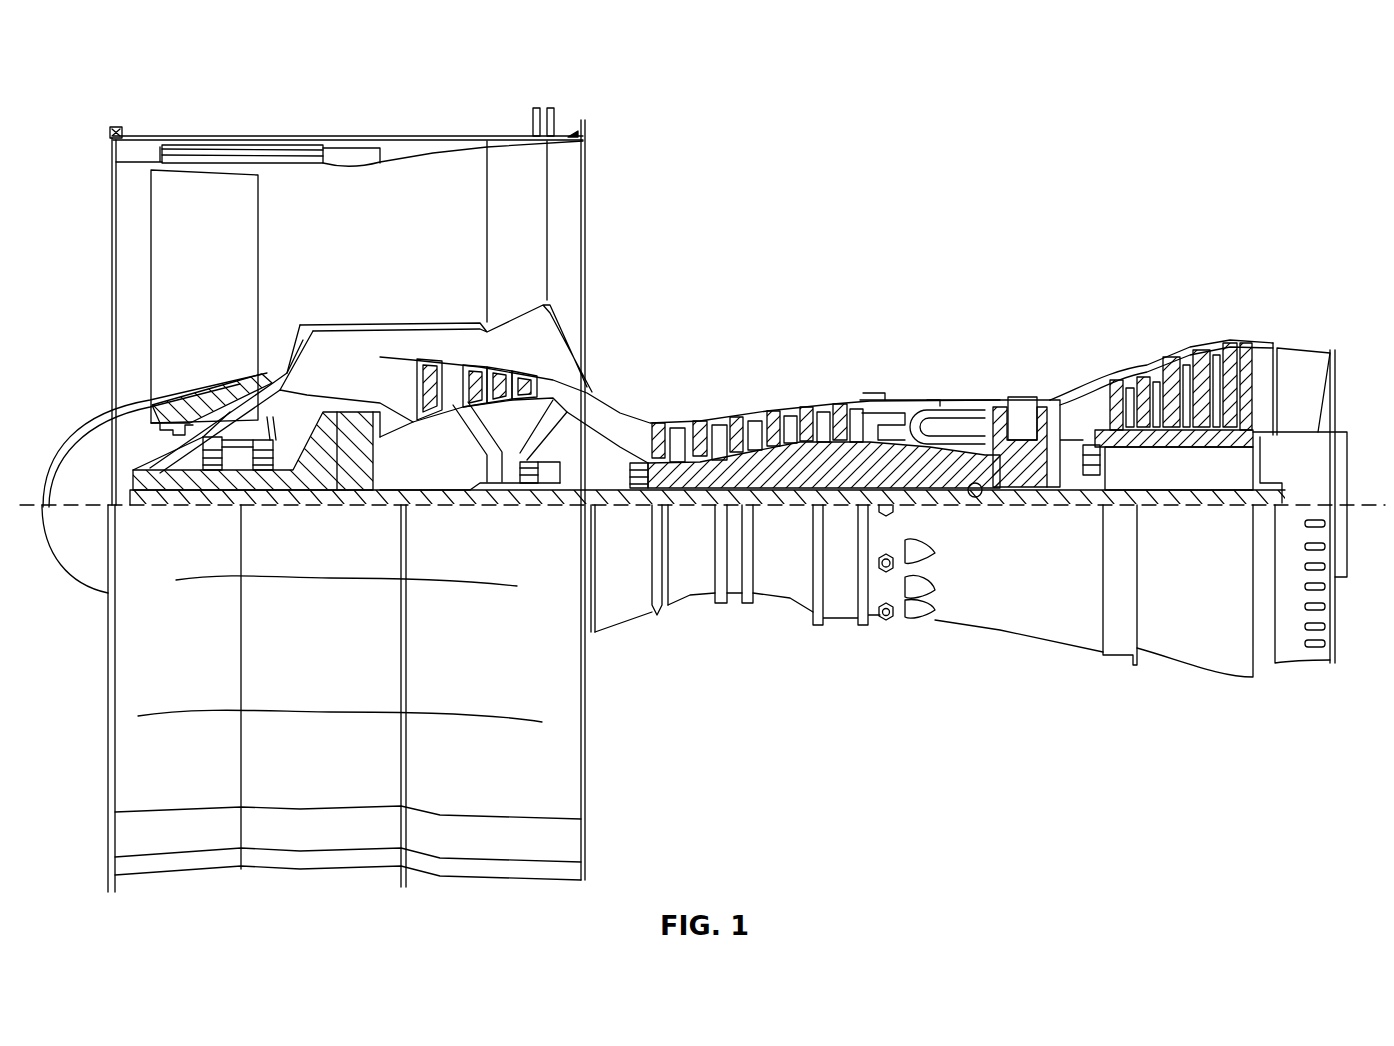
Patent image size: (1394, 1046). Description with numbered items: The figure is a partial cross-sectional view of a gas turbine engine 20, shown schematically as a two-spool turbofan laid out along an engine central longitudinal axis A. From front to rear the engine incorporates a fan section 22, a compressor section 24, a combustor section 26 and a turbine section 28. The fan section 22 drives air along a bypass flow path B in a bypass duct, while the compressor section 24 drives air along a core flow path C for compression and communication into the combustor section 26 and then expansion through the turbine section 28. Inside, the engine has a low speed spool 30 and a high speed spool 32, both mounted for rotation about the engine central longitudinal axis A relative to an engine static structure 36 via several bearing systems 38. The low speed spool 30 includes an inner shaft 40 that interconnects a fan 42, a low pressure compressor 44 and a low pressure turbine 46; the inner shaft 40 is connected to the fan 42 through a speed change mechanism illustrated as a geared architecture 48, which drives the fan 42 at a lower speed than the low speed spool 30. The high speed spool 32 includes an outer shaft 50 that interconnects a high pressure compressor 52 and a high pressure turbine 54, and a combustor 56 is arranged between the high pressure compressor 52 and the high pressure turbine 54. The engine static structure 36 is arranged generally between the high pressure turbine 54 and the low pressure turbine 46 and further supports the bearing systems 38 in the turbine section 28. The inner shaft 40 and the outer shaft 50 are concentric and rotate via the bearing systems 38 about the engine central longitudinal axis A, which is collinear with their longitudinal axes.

The gas turbine engine 20 is at (1222, 105).
The fan section 22 is at (205, 132).
The compressor section 24 is at (730, 335).
The combustor section 26 is at (955, 347).
The turbine section 28 is at (1167, 453).
The low speed spool 30 is at (802, 512).
The high speed spool 32 is at (862, 460).
The engine static structure 36 is at (845, 628).
The bearing systems 38 is at (200, 476).
The inner shaft 40 is at (640, 492).
The fan 42 is at (215, 268).
The low pressure compressor 44 is at (500, 387).
The low pressure turbine 46 is at (1185, 358).
The geared architecture 48 is at (338, 483).
The outer shaft 50 is at (976, 496).
The high pressure compressor 52 is at (768, 475).
The high pressure turbine 54 is at (1024, 400).
The combustor 56 is at (938, 426).
The engine central longitudinal axis A is at (1355, 500).
The bypass flow path B is at (435, 233).
The core flow path C is at (333, 370).